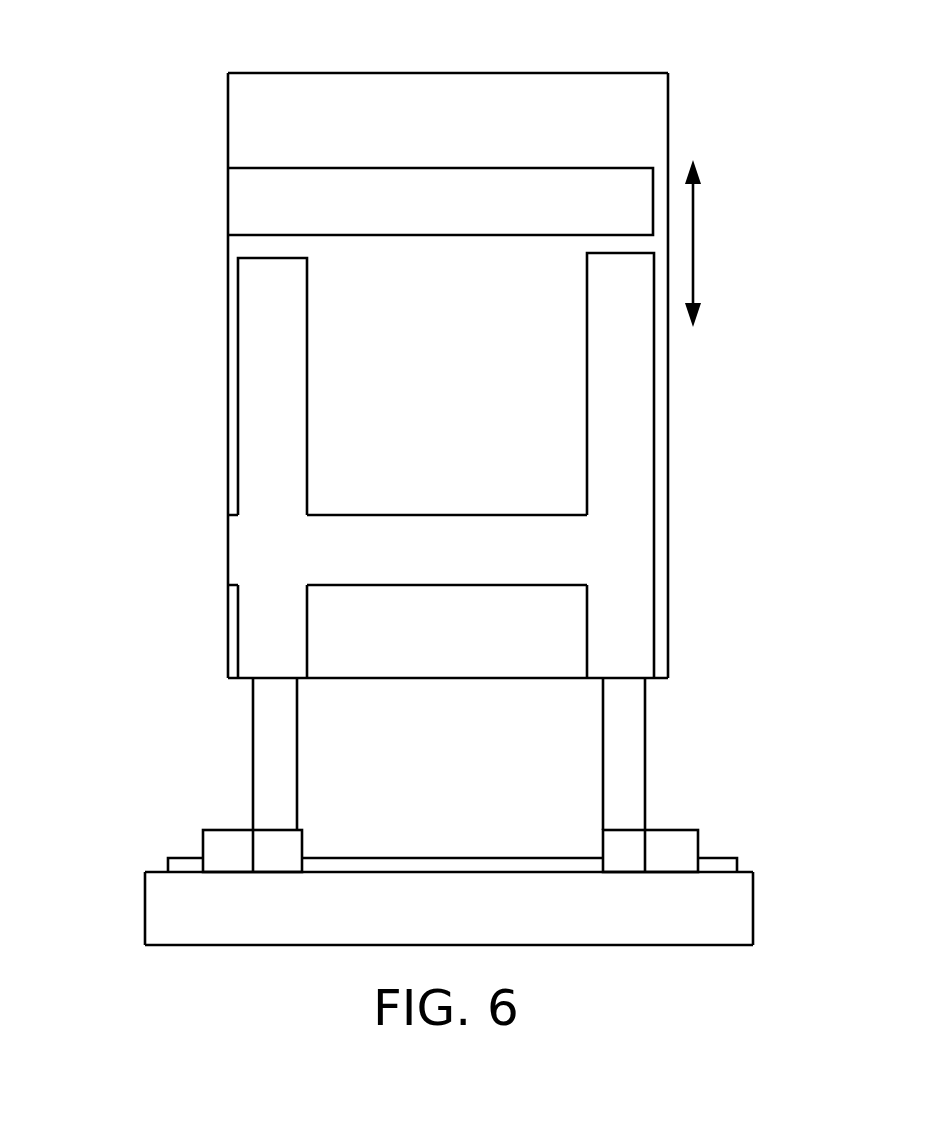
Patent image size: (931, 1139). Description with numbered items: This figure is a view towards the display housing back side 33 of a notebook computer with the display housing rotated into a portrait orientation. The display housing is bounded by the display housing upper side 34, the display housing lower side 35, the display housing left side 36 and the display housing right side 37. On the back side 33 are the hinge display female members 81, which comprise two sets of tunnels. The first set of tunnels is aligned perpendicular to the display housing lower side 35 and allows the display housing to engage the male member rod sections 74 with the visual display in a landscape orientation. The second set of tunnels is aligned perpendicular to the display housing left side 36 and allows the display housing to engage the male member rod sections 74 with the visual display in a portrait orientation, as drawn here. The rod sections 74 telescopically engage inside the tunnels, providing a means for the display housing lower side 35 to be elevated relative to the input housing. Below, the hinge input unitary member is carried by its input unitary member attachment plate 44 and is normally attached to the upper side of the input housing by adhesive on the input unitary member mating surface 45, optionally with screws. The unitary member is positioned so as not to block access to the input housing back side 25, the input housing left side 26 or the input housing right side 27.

The display housing right side 37 is at (269, 60).
The display housing upper side 34 is at (686, 429).
The display housing lower side 35 is at (212, 371).
The display housing left side 36 is at (460, 697).
The hinge display female member 81 is at (248, 205).
The display housing back side 33 is at (440, 636).
The display male member rod 74 is at (635, 722).
The input unitary member attachment plate 44 is at (437, 862).
The input unitary member mating surface 45 is at (384, 892).
The input housing back side 25 is at (176, 890).
The input housing right side 27 is at (124, 910).
The input housing left side 26 is at (772, 908).